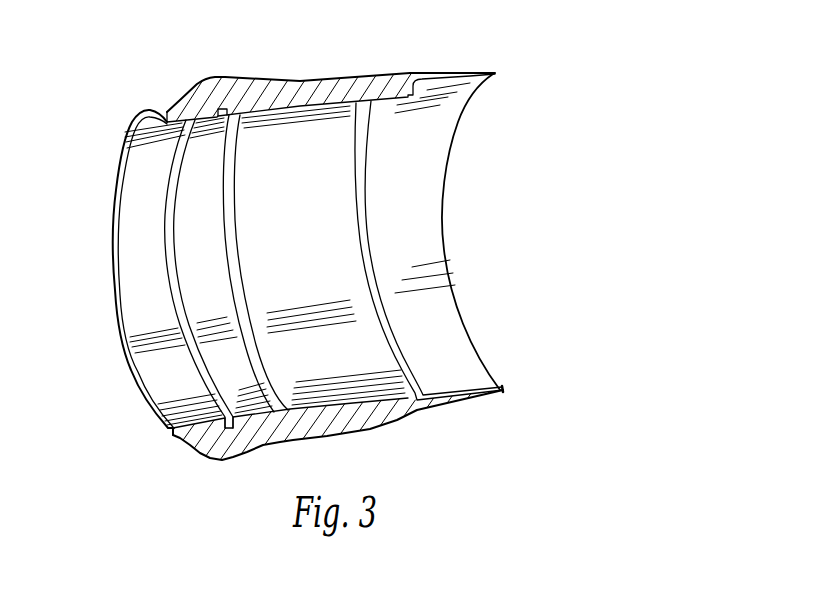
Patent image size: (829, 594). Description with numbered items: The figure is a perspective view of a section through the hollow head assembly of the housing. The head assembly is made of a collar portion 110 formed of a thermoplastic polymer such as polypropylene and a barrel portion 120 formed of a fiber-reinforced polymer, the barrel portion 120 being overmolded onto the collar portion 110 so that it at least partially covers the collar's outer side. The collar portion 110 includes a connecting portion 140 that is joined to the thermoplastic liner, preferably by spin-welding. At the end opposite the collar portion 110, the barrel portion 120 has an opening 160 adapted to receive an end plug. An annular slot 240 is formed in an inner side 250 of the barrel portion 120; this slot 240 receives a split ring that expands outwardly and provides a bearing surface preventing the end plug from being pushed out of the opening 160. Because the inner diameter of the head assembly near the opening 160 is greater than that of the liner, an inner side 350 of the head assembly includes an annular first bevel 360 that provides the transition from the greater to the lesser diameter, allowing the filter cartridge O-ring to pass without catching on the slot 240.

The collar portion 110 is at (481, 72).
The barrel portion 120 is at (301, 79).
The connecting portion 140 is at (447, 333).
The opening 160 is at (138, 315).
The annular slot 240 is at (157, 405).
The inner side 250 is at (256, 411).
The inner side 350 is at (322, 301).
The annular first bevel 360 is at (258, 359).